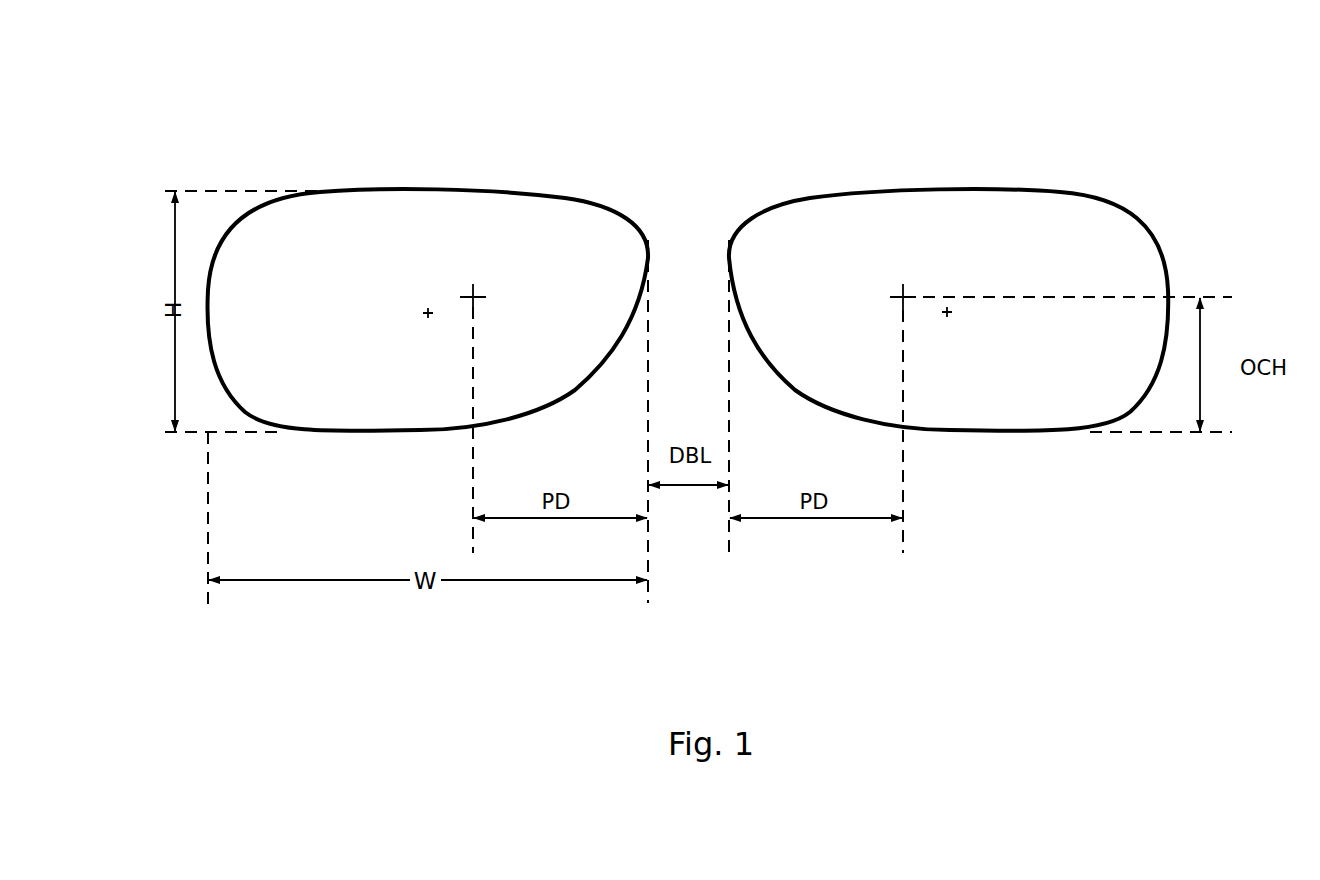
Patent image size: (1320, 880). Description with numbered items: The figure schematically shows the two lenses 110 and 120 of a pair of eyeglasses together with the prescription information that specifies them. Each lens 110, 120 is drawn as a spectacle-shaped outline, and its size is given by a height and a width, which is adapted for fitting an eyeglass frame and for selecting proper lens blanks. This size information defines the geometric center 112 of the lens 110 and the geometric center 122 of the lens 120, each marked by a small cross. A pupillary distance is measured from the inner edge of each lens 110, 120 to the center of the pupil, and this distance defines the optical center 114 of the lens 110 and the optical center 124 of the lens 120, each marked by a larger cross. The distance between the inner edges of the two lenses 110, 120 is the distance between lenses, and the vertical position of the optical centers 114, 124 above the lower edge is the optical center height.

The lens 110 is at (375, 240).
The geometric center 112 is at (437, 300).
The optical center 114 is at (483, 290).
The lens 120 is at (1016, 242).
The geometric center 122 is at (957, 300).
The optical center 124 is at (912, 288).